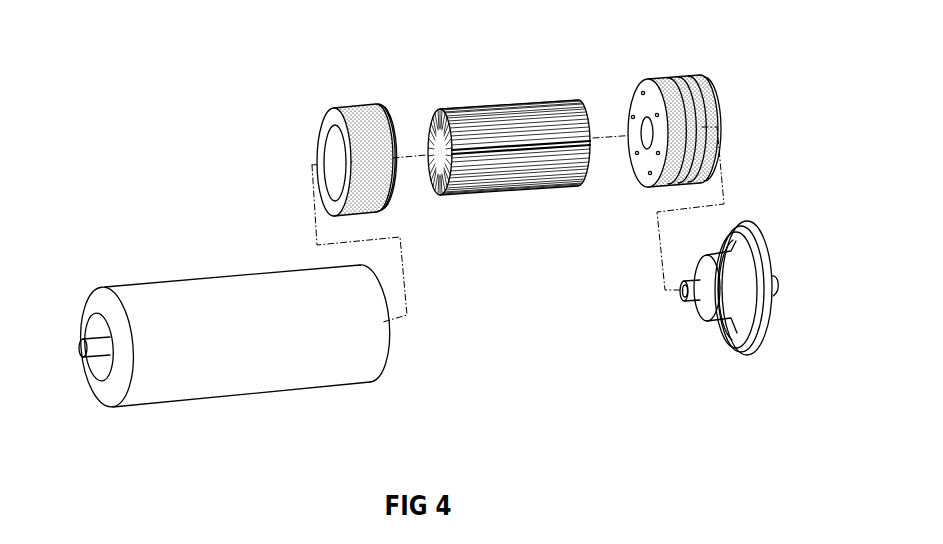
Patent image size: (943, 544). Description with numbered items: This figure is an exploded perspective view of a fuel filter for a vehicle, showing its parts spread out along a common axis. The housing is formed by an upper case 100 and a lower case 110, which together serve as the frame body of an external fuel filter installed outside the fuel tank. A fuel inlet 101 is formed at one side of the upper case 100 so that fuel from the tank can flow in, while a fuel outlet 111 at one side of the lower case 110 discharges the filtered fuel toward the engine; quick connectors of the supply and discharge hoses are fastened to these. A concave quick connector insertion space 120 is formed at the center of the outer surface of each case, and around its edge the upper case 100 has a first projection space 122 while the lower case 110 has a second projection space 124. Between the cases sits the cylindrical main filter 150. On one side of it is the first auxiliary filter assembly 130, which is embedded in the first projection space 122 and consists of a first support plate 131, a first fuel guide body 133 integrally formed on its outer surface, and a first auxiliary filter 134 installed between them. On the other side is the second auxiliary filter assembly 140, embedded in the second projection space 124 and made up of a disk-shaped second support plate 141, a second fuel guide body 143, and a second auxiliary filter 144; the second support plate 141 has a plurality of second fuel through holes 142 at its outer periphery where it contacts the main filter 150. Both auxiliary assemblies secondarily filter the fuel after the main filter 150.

The upper case 100 is at (193, 272).
The fuel inlet 101 is at (86, 338).
The lower case 110 is at (747, 206).
The fuel outlet 111 is at (681, 294).
The quick connector insertion space 120 is at (98, 326).
The first projection space 122 is at (113, 390).
The second projection space 124 is at (740, 343).
The first auxiliary filter assembly 130 is at (345, 100).
The first support plate 131 is at (389, 125).
The first fuel guide body 133 is at (326, 128).
The first auxiliary filter 134 is at (357, 114).
The second auxiliary filter assembly 140 is at (664, 69).
The second support plate 141 is at (648, 181).
The second fuel through holes 142 is at (631, 115).
The second fuel guide body 143 is at (688, 85).
The second auxiliary filter 144 is at (698, 105).
The main filter 150 is at (507, 109).